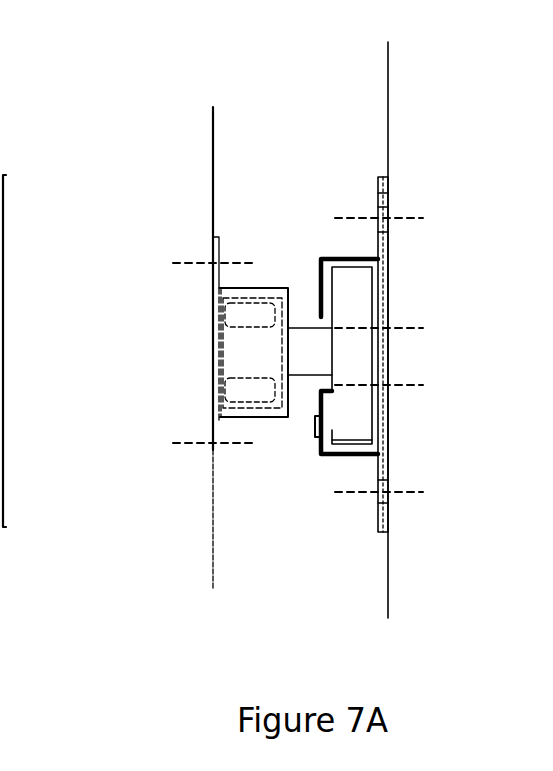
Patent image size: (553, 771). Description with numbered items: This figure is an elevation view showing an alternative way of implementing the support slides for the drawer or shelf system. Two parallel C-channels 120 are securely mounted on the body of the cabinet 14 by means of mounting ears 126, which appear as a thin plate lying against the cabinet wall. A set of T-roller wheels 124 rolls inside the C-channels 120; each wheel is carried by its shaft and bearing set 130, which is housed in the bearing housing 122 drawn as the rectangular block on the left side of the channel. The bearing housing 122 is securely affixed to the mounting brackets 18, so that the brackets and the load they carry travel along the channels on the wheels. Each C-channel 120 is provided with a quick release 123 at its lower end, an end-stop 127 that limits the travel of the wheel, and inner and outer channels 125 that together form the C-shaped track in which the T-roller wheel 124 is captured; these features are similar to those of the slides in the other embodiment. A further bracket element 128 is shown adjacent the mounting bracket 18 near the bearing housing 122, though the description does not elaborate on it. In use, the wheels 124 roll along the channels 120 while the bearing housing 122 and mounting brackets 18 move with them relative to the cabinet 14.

The cabinet 14 is at (395, 572).
The mounting bracket 18 is at (197, 552).
The C-channel 120 is at (368, 176).
The bearing housing 122 is at (288, 288).
The quick release 123 is at (313, 425).
The T-roller wheel 124 is at (355, 292).
The inner/outer channel 125 is at (378, 254).
The mounting ear 126 is at (385, 191).
The end-stop 127 is at (385, 398).
The bracket 128 is at (212, 248).
The shaft and bearing set 130 is at (252, 388).